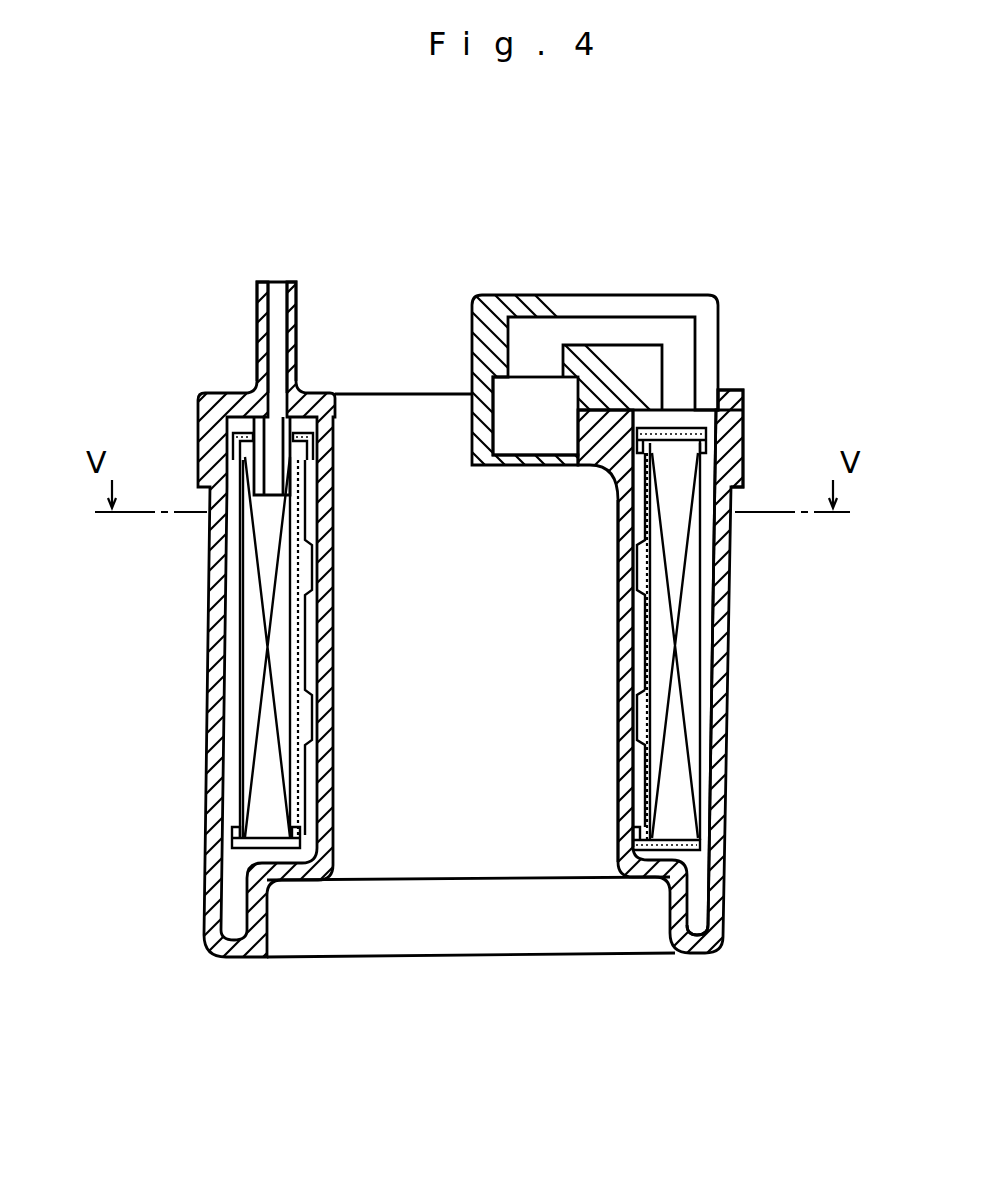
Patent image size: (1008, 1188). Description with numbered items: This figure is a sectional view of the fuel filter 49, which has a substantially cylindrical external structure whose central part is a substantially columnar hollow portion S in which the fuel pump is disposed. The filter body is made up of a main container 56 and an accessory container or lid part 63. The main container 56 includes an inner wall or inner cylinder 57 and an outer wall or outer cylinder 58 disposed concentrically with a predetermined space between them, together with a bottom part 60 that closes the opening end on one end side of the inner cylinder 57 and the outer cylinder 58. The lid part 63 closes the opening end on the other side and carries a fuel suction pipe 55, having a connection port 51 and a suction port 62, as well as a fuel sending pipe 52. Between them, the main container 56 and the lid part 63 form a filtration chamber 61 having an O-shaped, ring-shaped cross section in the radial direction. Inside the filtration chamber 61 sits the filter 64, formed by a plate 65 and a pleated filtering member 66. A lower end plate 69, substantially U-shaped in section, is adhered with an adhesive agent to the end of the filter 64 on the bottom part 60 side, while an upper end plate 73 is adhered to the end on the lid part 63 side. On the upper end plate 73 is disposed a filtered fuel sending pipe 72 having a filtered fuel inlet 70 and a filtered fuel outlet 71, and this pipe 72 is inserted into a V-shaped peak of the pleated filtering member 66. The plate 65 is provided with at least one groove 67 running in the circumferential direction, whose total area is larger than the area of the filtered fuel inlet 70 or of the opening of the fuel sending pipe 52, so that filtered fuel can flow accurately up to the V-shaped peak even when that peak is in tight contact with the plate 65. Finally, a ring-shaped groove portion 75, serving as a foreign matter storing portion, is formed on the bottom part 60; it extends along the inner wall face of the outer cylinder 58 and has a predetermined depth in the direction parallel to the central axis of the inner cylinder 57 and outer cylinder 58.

The fuel filter 49 is at (186, 827).
The connection port 51 is at (537, 423).
The fuel sending pipe 52 is at (296, 316).
The fuel suction pipe 55 is at (608, 294).
The main container 56 is at (213, 712).
The inner wall (inner cylinder) 57 is at (616, 766).
The outer wall (outer cylinder) 58 is at (734, 747).
The bottom part 60 is at (640, 878).
The filtration chamber 61 is at (718, 673).
The suction port 62 is at (677, 410).
The accessory container (lid part) 63 is at (743, 391).
The filter 64 is at (737, 612).
The plate 65 is at (642, 660).
The filtering member 66 is at (690, 580).
The groove 67 is at (643, 678).
The lower end plate 69 is at (724, 848).
The filtered fuel inlet 70 is at (272, 503).
The filtered fuel outlet 71 is at (270, 395).
The filtered fuel sending pipe 72 is at (200, 457).
The upper end plate 73 is at (706, 430).
The groove portion (foreign matter storing portion) 75 is at (693, 920).
The substantially columnar hollow portion S is at (448, 822).